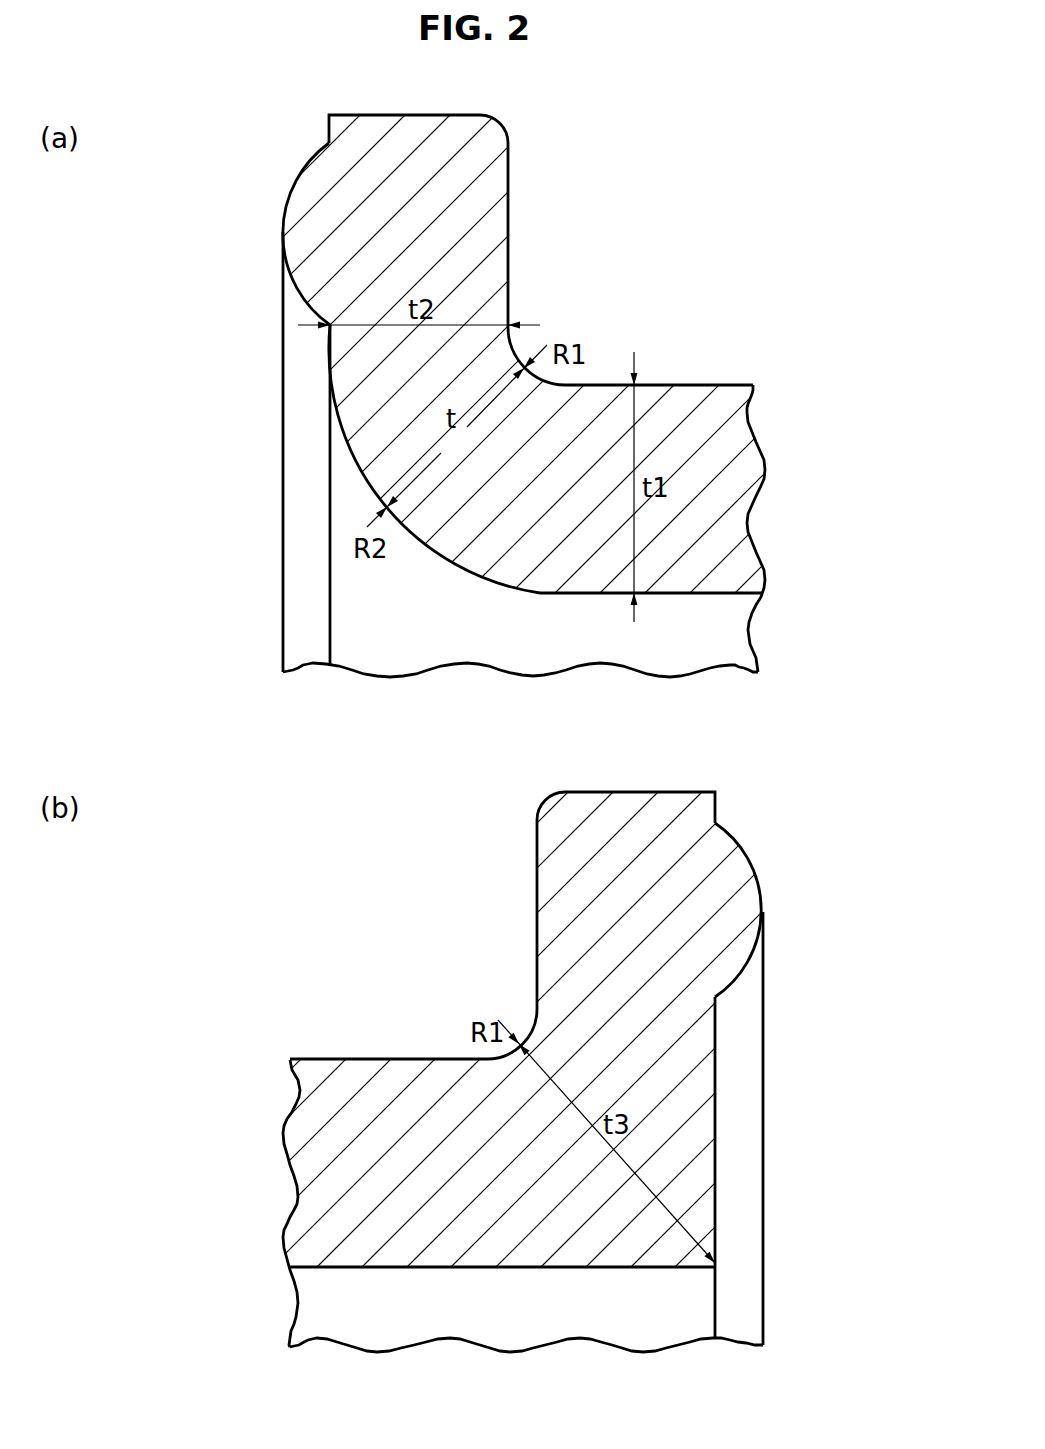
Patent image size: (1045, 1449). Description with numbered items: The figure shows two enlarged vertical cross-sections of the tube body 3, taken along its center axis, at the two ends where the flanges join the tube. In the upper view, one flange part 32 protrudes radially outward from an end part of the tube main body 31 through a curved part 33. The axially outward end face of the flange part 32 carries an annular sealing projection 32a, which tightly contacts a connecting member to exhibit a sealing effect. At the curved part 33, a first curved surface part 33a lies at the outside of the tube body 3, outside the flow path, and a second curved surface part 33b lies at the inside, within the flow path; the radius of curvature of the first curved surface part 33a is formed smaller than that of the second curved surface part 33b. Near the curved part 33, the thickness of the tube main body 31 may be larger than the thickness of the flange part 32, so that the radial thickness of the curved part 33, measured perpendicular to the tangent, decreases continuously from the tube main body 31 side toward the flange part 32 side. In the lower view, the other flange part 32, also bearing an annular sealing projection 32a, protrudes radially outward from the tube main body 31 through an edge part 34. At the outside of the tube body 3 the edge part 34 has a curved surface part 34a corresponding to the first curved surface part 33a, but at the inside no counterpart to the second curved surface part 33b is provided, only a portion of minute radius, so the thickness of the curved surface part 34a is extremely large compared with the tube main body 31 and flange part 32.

The tube body 3 is at (206, 260).
The tube main body 31 is at (727, 400).
The flange part 32 is at (478, 190).
The annular sealing projection 32a is at (312, 191).
The curved part 33 is at (452, 535).
The first curved surface part 33a is at (530, 347).
The second curved surface part 33b is at (373, 487).
The edge part 34 is at (698, 1222).
The curved surface part 34a is at (528, 1037).